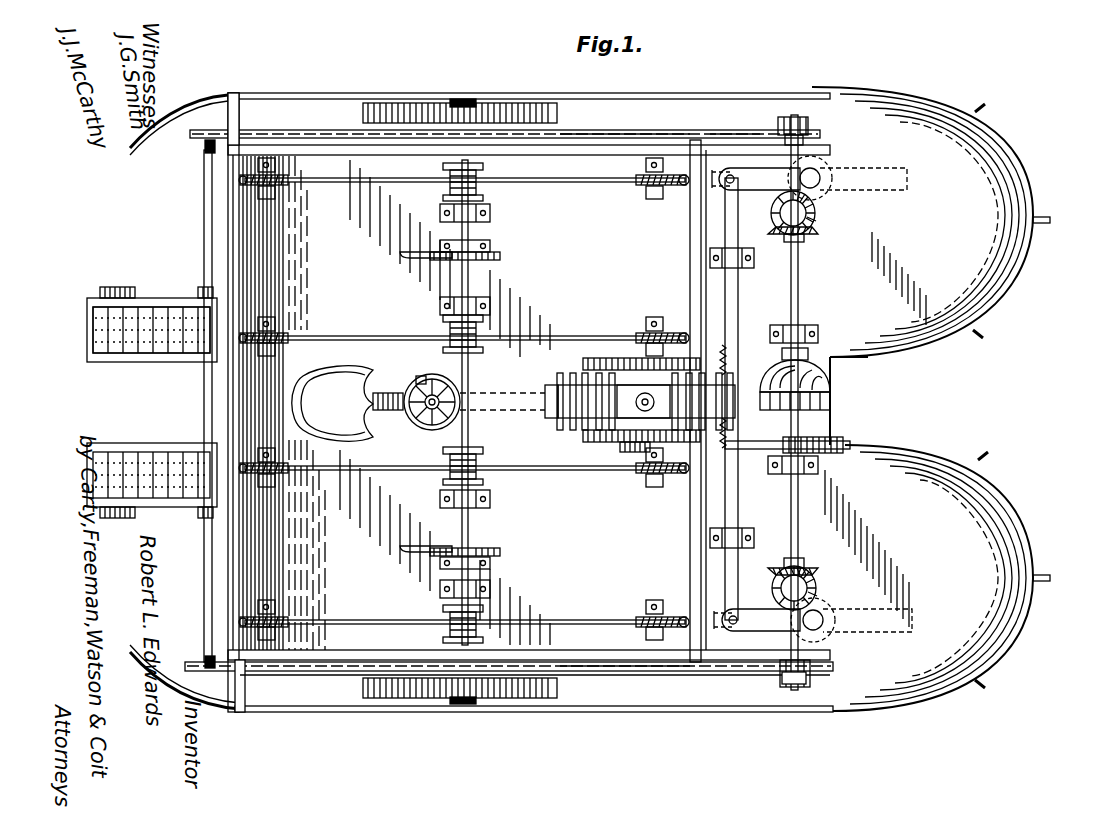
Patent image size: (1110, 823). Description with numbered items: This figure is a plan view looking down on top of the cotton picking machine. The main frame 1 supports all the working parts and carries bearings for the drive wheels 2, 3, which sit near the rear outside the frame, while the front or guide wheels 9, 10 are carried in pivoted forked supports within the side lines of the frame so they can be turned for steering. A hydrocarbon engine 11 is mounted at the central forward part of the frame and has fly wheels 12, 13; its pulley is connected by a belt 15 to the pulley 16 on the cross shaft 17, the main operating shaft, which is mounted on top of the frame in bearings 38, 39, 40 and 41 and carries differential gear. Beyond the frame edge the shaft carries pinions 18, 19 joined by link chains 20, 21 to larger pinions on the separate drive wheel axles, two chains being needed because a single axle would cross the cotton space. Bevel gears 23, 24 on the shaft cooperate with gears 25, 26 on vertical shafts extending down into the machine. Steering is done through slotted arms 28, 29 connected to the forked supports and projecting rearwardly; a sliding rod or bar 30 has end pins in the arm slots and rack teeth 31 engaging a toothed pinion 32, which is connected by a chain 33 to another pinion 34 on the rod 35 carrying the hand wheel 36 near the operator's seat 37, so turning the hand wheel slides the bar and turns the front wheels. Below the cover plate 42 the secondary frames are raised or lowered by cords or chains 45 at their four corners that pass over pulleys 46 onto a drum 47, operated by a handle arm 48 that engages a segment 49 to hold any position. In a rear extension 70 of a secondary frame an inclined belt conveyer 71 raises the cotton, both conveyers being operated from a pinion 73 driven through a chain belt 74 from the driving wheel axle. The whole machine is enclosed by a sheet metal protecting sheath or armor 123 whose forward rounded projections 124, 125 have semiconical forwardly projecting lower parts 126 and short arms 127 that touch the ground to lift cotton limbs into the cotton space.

The main frame 1 is at (690, 270).
The drive wheel 2 is at (560, 688).
The drive wheel 3 is at (363, 112).
The front or guide wheel 9 is at (913, 618).
The front or guide wheel 10 is at (908, 188).
The hydrocarbon engine 11 is at (548, 418).
The fly wheel 12 is at (590, 440).
The fly wheel 13 is at (585, 364).
The belt 15 is at (636, 455).
The pulley 16 is at (840, 441).
The cross shaft 17 is at (798, 292).
The pinion 18 is at (812, 668).
The pinion 19 is at (810, 141).
The link chain 20 is at (668, 670).
The link chain 21 is at (660, 120).
The bevel gear 23 is at (812, 562).
The bevel gear 24 is at (812, 236).
The gear 25 is at (816, 586).
The gear 26 is at (815, 212).
The slotted arm 28 is at (768, 620).
The slotted arm 29 is at (768, 185).
The sliding rod or bar 30 is at (740, 318).
The rack teeth 31 is at (730, 352).
The toothed pinion 32 is at (728, 420).
The chain 33 is at (495, 393).
The pinion 34 is at (420, 380).
The rod 35 is at (450, 412).
The hand wheel 36 is at (412, 420).
The seat 37 is at (332, 403).
The bearing 38 is at (782, 682).
The bearing 39 is at (808, 122).
The bearing 40 is at (818, 468).
The bearing 41 is at (818, 330).
The cover plate 42 is at (481, 402).
The cords or chains 45 is at (336, 336).
The pulley 46 is at (282, 188).
The drum 47 is at (484, 322).
The handle arm 48 is at (416, 258).
The segment 49 is at (488, 262).
The extension of the frame 70 is at (158, 300).
The belt conveyer 71 is at (158, 350).
The pinion 73 is at (200, 145).
The chain belt 74 is at (328, 675).
The protecting sheath or armor 123 is at (458, 102).
The upper hull 124 is at (958, 252).
The lower hull 125 is at (975, 556).
The semiconical forwardly projecting lower parts 126 is at (1015, 182).
The short arms 127 is at (1050, 221).